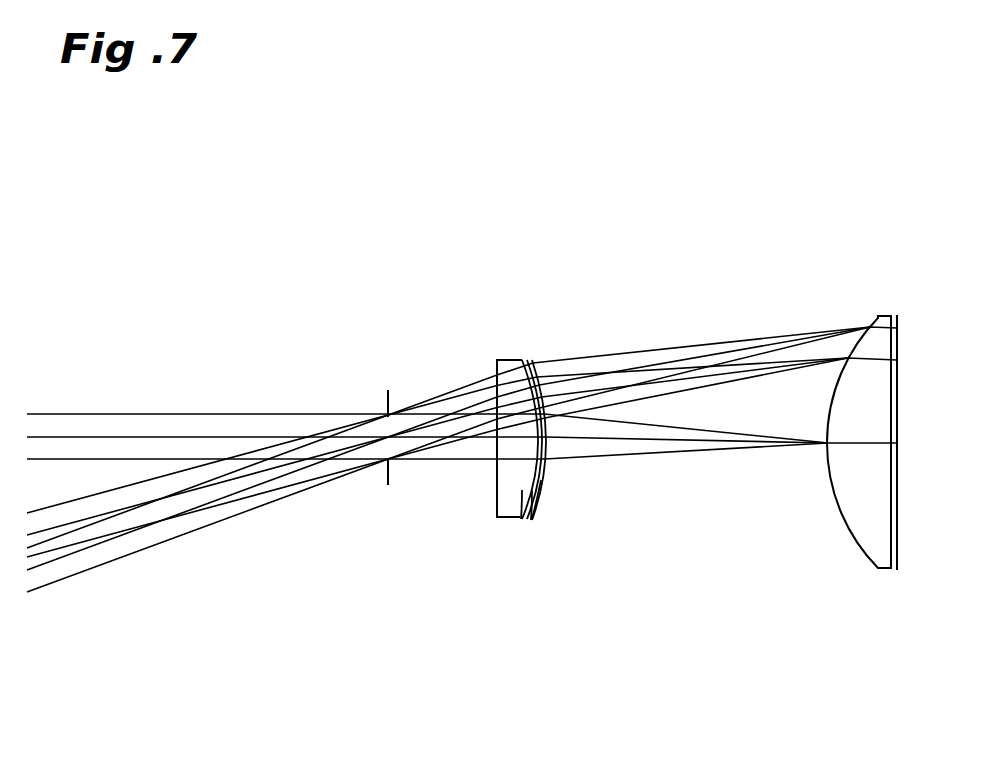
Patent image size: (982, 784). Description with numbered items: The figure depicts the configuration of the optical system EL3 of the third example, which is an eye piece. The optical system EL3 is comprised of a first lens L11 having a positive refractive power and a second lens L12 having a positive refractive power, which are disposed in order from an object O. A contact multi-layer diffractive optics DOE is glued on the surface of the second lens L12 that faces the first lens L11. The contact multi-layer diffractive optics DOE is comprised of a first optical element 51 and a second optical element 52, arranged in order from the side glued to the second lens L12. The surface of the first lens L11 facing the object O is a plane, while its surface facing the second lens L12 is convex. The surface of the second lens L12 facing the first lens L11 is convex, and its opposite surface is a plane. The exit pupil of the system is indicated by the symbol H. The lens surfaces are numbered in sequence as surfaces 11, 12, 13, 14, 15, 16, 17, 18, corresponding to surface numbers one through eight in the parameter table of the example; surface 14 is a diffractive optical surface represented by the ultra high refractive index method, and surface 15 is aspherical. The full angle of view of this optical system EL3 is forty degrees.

The surface 11 is at (390, 485).
The surface 12 is at (495, 505).
The surface 13 is at (509, 518).
The surface 14 is at (517, 522).
The surface 15 is at (524, 522).
The surface 16 is at (539, 500).
The surface 17 is at (857, 553).
The surface 18 is at (896, 572).
The first optical element 51 is at (524, 358).
The second optical element 52 is at (532, 358).
The exit pupil H is at (392, 392).
The first lens L11 is at (884, 315).
The second lens L12 is at (505, 358).
The object O is at (900, 333).
The contact multi-layer diffractive optics DOE is at (602, 238).
The optical system EL3 is at (401, 197).